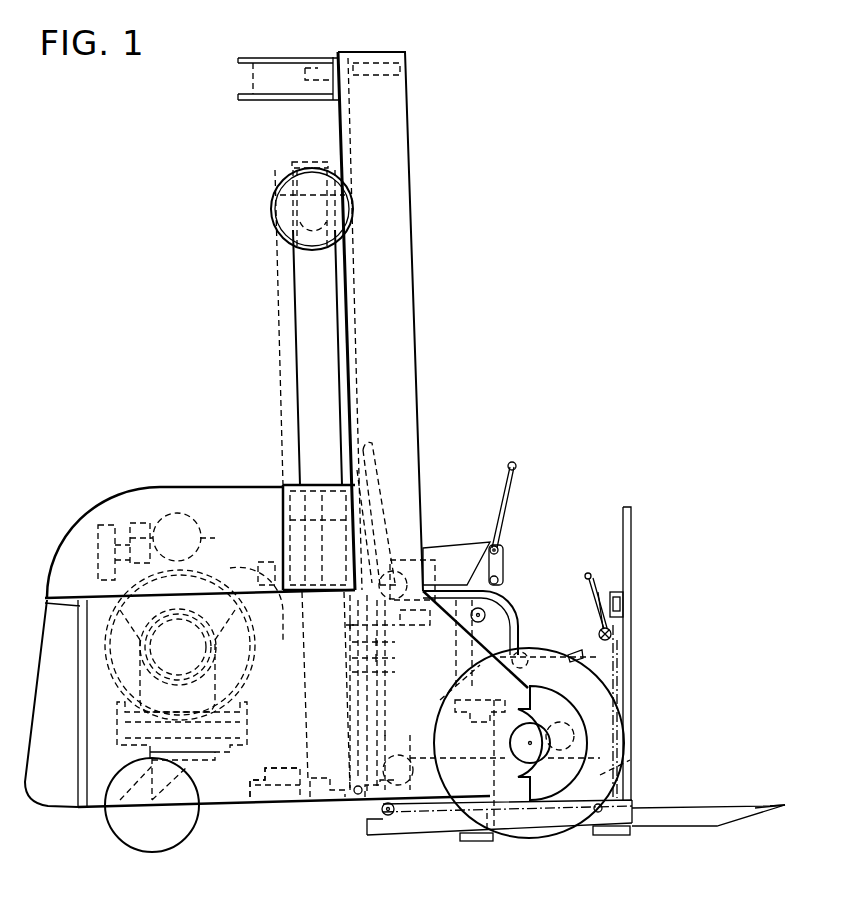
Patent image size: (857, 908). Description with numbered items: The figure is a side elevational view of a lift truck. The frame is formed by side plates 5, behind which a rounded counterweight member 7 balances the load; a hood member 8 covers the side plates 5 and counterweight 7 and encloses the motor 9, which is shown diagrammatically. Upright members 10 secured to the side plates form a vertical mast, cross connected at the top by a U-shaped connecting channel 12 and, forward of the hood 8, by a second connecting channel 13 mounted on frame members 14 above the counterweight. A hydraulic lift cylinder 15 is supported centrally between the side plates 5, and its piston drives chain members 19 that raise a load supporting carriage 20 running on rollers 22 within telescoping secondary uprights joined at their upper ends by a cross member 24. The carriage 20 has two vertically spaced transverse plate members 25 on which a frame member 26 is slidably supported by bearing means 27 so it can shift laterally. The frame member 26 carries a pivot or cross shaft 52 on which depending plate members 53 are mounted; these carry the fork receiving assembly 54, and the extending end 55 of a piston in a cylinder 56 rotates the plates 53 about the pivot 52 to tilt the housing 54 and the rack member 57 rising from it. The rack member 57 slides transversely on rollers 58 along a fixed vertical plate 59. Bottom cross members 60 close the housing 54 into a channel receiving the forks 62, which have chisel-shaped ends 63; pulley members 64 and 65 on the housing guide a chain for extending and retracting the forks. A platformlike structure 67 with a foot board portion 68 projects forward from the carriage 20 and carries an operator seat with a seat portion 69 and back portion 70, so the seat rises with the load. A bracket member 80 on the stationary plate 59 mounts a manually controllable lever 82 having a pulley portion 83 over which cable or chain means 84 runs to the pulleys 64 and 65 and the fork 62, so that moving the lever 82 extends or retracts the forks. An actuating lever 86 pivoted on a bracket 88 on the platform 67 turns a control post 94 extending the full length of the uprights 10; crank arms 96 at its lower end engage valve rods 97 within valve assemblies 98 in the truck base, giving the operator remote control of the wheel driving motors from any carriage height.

The side plates 5 is at (222, 790).
The counterweight member 7 is at (53, 784).
The hood member 8 is at (228, 497).
The motor 9 is at (202, 558).
The upright members 10 is at (403, 355).
The U-shaped connecting channel 12 is at (277, 72).
The second connecting channel 13 is at (290, 483).
The frame members 14 is at (320, 483).
The hydraulic lift cylinder 15 is at (302, 282).
The chain members 19 is at (278, 345).
The load supporting carriage 20 is at (358, 690).
The rollers 22 is at (422, 545).
The cross member 24 is at (320, 70).
The plate members 25 is at (470, 616).
The frame member 26 is at (506, 613).
The bearing means 27 is at (393, 843).
The pivot or cross shaft 52 is at (555, 712).
The depending plate members 53 is at (630, 760).
The fork receiving assembly 54 is at (443, 825).
The extending end of piston 55 is at (487, 813).
The cylinder 56 is at (515, 628).
The rack member 57 is at (632, 667).
The rollers 58 is at (622, 602).
The fixed vertical plate 59 is at (622, 640).
The bottom cross members 60 is at (470, 841).
The forks 62 is at (672, 815).
The chisel-shaped ends 63 is at (748, 806).
The pulley member 64 is at (365, 813).
The pulley member 65 is at (595, 812).
The platformlike structure 67 is at (497, 597).
The foot board portion 68 is at (547, 650).
The seat portion 69 is at (462, 548).
The back portion 70 is at (383, 482).
The bracket member 80 is at (603, 628).
The manually controllable lever 82 is at (588, 573).
The pulley portion 83 is at (589, 623).
The cable or chain means 84 is at (633, 682).
The actuating lever 86 is at (512, 488).
The bracket 88 is at (492, 547).
The control post 94 is at (358, 335).
The crank arms 96 is at (355, 795).
The valve rods 97 is at (322, 798).
The valve assemblies 98 is at (267, 793).